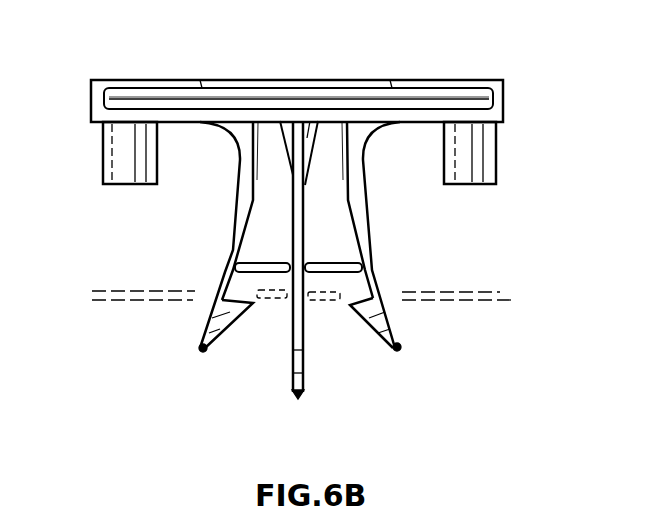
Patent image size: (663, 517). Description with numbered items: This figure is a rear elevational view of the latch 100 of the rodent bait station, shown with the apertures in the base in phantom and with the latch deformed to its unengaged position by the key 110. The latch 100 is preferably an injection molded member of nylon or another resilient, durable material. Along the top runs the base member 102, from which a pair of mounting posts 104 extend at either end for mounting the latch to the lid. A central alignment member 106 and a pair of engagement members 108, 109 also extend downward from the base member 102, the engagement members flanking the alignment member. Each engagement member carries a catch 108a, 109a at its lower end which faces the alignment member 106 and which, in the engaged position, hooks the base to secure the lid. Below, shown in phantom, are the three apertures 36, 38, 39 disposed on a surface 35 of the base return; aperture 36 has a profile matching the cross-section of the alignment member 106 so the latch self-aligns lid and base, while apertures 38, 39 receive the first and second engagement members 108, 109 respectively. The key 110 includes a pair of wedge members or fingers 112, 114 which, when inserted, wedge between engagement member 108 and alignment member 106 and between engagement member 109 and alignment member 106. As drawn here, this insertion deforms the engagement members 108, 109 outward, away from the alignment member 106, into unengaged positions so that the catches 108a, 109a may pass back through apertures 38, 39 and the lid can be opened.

The latch 100 is at (488, 72).
The base member 102 is at (350, 86).
The mounting posts 104 is at (108, 148).
The alignment member 106 is at (297, 399).
The first engagement member 108 is at (203, 348).
The catch 108a is at (222, 315).
The second engagement member 109 is at (398, 348).
The catch 109a is at (370, 307).
The key 110 is at (362, 263).
The wedge member or finger 112 is at (271, 263).
The wedge member or finger 114 is at (328, 263).
The surface 35 is at (501, 292).
The aperture 36 is at (307, 303).
The aperture 38 is at (196, 291).
The aperture 39 is at (401, 292).